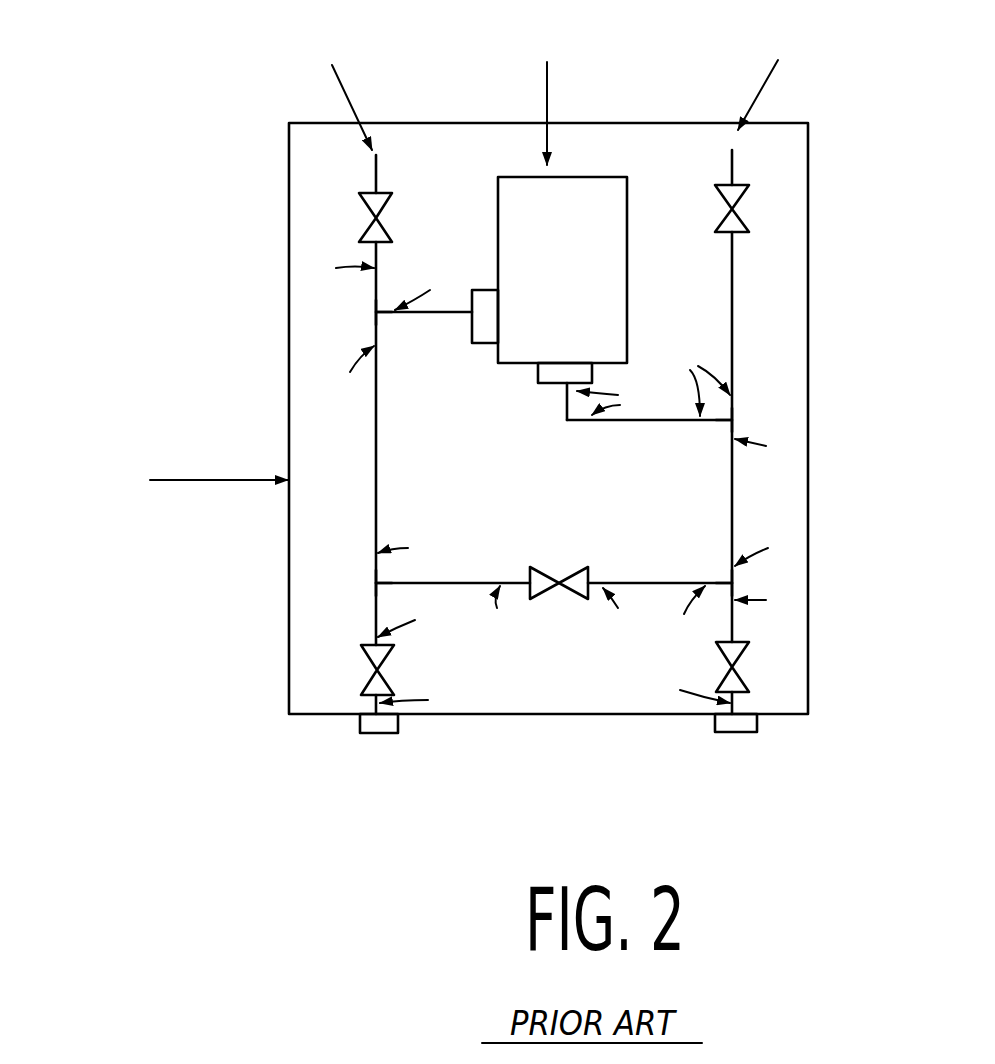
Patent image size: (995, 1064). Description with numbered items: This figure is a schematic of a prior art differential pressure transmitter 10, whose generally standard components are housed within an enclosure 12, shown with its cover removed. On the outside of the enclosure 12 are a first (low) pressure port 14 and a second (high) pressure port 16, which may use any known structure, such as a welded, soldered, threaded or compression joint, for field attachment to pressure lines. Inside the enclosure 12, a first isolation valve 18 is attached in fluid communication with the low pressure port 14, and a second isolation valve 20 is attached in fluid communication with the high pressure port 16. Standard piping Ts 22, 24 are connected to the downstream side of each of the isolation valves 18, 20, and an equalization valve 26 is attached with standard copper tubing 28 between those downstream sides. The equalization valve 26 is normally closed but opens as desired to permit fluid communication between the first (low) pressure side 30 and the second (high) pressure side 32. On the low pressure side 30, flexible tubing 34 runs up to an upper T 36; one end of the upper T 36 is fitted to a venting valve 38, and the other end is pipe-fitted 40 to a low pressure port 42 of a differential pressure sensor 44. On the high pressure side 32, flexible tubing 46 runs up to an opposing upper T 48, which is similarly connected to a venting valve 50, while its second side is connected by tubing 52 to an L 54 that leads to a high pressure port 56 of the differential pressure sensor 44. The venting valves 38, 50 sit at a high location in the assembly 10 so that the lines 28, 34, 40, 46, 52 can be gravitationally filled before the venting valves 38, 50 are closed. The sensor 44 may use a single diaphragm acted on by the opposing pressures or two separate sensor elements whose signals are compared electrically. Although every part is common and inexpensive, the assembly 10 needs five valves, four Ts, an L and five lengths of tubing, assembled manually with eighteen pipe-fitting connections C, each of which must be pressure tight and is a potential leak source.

The differential pressure transmitter 10 is at (678, 88).
The enclosure 12 is at (288, 376).
The first (low) pressure port 14 is at (360, 724).
The second (high) pressure port 16 is at (757, 723).
The first isolation valve 18 is at (362, 651).
The second isolation valve 20 is at (748, 684).
The piping T 22 is at (375, 582).
The piping T 24 is at (735, 581).
The equalization valve 26 is at (574, 600).
The copper tubing 28 is at (460, 582).
The first (low) pressure side 30 is at (333, 679).
The second (high) pressure side 32 is at (784, 620).
The flexible tubing 34 is at (376, 505).
The upper T 36 is at (374, 314).
The venting valve 38 is at (360, 195).
The pipe fitting 40 is at (418, 316).
The low pressure port 42 is at (486, 290).
The differential pressure sensor 44 is at (573, 196).
The flexible tubing 46 is at (734, 485).
The opposing upper T 48 is at (735, 425).
The venting valve 50 is at (742, 196).
The tubing 52 is at (648, 422).
The L 54 is at (566, 419).
The high pressure port 56 is at (538, 368).